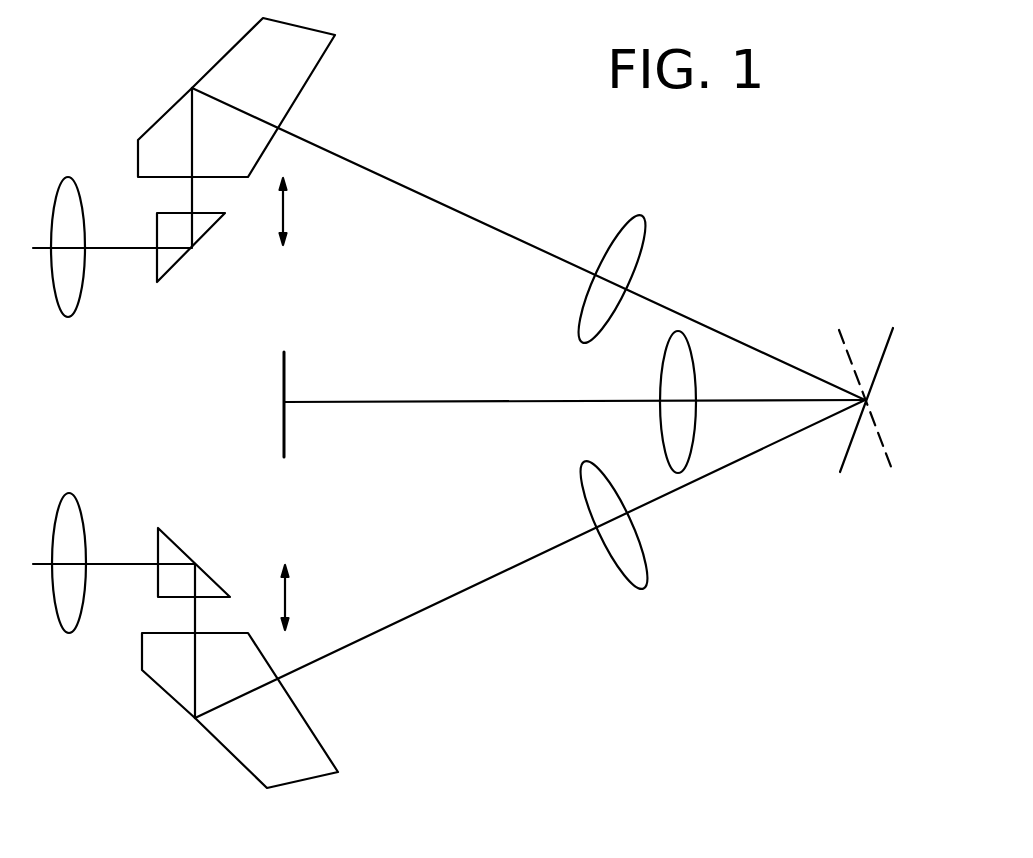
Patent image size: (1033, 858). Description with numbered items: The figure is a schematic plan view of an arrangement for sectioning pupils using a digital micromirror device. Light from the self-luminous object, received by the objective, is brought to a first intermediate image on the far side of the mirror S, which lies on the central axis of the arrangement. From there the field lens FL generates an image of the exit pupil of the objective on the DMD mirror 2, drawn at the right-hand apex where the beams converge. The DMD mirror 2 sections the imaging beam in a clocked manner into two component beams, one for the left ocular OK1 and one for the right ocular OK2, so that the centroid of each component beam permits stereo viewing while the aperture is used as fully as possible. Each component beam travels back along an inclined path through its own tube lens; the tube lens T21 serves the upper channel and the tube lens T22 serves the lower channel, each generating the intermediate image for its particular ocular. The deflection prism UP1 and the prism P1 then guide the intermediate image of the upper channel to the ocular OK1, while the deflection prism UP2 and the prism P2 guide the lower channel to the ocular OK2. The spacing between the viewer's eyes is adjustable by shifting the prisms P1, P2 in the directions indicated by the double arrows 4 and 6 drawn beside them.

The deflection prism UP1 is at (313, 73).
The deflection prism UP2 is at (300, 783).
The prism P1 is at (177, 265).
The prism P2 is at (177, 545).
The left ocular OK1 is at (112, 267).
The right ocular OK2 is at (114, 580).
The double arrow 4 is at (285, 210).
The double arrow 6 is at (285, 597).
The mirror S is at (284, 427).
The field lens FL is at (660, 367).
The tube lens T21 is at (645, 253).
The tube lens T22 is at (648, 560).
The DMD mirror 2 is at (847, 455).